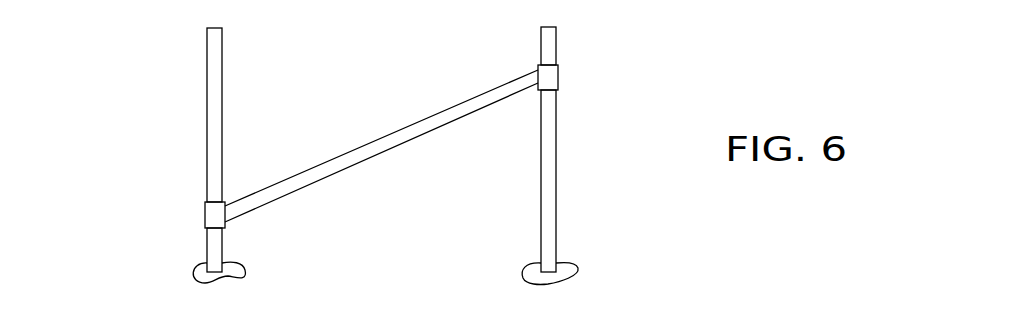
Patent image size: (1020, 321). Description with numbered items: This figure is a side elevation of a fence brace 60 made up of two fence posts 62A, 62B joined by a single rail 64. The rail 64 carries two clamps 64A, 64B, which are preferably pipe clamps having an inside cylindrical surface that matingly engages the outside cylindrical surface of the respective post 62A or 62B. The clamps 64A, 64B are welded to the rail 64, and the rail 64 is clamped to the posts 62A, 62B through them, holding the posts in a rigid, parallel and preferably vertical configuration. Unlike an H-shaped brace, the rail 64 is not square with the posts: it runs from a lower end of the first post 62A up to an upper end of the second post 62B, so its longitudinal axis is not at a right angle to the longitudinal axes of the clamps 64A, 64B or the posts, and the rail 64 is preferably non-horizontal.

The fence brace 60 is at (146, 51).
The fence post 62A is at (223, 42).
The fence post 62B is at (557, 190).
The rail 64 is at (367, 142).
The clamp 64A is at (205, 216).
The clamp 64B is at (558, 75).